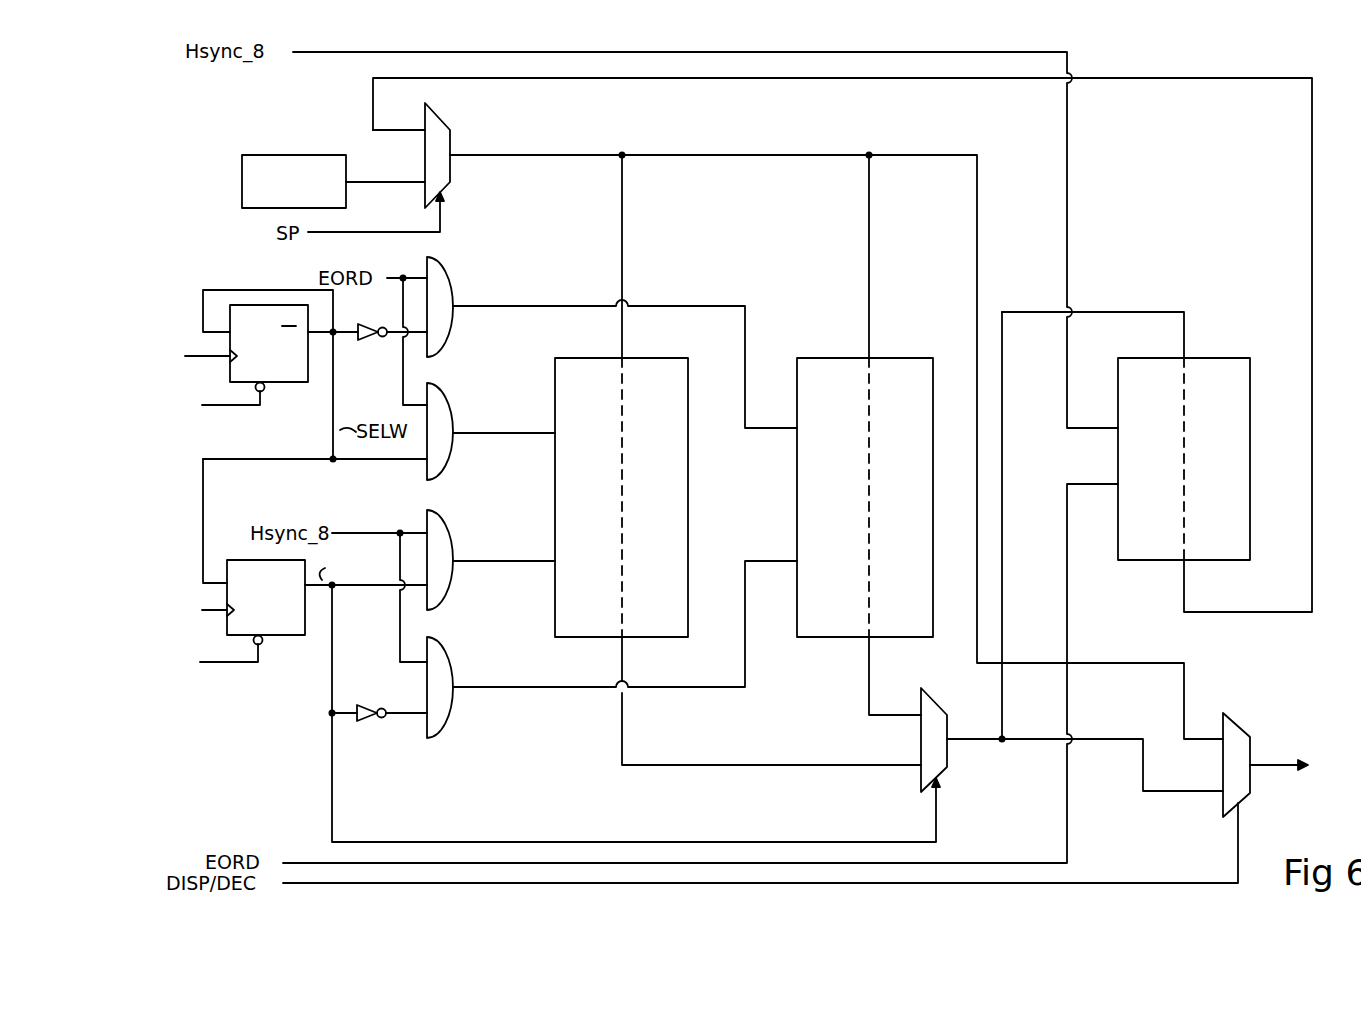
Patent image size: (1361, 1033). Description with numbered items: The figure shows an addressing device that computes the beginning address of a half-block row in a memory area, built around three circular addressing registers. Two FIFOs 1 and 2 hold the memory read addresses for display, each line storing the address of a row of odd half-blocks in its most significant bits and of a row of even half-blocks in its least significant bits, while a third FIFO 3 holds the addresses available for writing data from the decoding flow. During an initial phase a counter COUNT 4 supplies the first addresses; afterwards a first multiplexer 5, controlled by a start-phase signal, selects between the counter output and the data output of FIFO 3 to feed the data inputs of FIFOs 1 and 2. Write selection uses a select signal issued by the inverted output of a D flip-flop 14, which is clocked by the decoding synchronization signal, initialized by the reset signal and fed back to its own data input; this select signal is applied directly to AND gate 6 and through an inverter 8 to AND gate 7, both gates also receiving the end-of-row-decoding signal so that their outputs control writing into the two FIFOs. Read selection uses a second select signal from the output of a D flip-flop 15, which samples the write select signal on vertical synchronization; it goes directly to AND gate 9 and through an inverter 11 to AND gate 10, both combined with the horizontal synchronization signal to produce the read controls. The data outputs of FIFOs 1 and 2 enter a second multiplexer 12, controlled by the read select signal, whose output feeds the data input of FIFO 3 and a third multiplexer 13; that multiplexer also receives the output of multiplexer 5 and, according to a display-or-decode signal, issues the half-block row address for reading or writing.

The first FIFO 1 is at (683, 487).
The second FIFO 2 is at (906, 362).
The third FIFO 3 is at (1226, 358).
The counter COUNT 4 is at (292, 155).
The first multiplexer 5 is at (448, 117).
The AND gate 6 is at (444, 384).
The AND gate 7 is at (444, 268).
The inverter 8 is at (370, 326).
The AND gate 9 is at (446, 515).
The AND gate 10 is at (448, 645).
The inverter 11 is at (366, 705).
The second multiplexer 12 is at (932, 690).
The third multiplexer 13 is at (1224, 711).
The D flip-flop 14 is at (297, 382).
The D flip-flop 15 is at (295, 635).